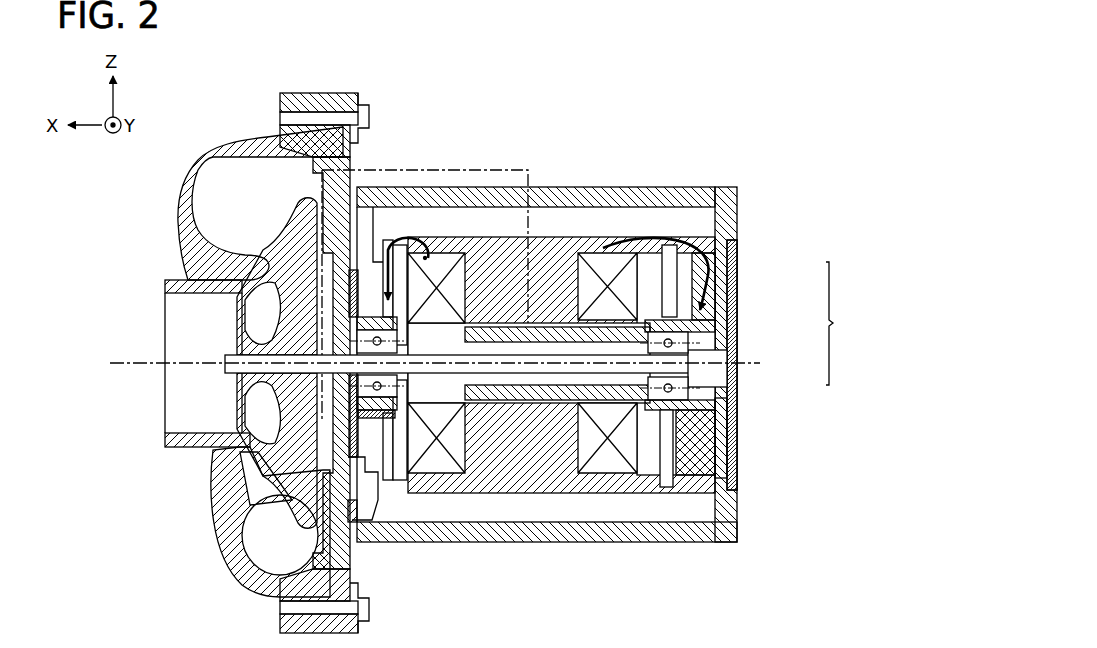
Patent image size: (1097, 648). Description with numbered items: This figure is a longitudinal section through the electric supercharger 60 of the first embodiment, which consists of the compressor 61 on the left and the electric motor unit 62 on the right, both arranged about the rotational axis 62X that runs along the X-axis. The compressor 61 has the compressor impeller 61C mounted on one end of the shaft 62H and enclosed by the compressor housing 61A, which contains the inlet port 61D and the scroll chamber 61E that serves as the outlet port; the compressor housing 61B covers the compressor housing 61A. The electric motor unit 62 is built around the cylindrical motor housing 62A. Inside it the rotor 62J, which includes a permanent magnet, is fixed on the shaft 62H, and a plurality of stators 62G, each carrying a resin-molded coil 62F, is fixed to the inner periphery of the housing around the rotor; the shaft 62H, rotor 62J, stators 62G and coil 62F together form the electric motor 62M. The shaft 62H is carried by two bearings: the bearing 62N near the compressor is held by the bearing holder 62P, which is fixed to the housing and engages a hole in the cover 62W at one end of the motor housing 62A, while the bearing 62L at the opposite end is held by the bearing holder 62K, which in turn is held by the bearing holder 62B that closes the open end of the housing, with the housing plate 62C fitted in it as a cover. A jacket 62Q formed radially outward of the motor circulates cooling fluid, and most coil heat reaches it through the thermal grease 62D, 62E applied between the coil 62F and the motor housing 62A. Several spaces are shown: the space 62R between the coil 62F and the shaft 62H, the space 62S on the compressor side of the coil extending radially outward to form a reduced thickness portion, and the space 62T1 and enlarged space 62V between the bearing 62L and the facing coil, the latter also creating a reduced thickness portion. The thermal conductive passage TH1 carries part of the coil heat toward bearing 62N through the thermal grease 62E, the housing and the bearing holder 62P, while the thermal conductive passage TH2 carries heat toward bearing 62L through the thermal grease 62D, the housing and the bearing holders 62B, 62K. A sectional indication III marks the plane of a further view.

The electric supercharger 60 is at (782, 123).
The compressor 61 is at (294, 46).
The compressor housing 61A is at (228, 140).
The compressor housing 61B is at (350, 170).
The compressor impeller 61C is at (166, 323).
The inlet port 61D is at (193, 422).
The scroll chamber 61E is at (265, 545).
The electric motor unit 62 is at (667, 178).
The motor housing 62A is at (582, 188).
The bearing holder 62B is at (726, 207).
The housing plate 62C is at (733, 248).
The thermal grease 62D is at (617, 260).
The thermal grease 62E is at (452, 240).
The coil 62F is at (625, 292).
The stator 62G is at (678, 356).
The shaft 62H is at (681, 357).
The rotor 62J is at (681, 397).
The bearing holder 62K is at (735, 430).
The bearing 62L is at (718, 431).
The electric motor 62M is at (850, 323).
The bearing 62N is at (410, 400).
The bearing holder 62P is at (381, 420).
The jacket 62Q is at (513, 513).
The space 62R is at (425, 258).
The space 62S is at (394, 233).
The space 62T1 is at (650, 452).
The enlarged space 62V is at (668, 467).
The cover 62W is at (359, 470).
The rotational axis 62X is at (140, 367).
The thermal conductive passage TH1 is at (454, 258).
The thermal conductive passage TH2 is at (684, 235).
The section line III is at (523, 168).